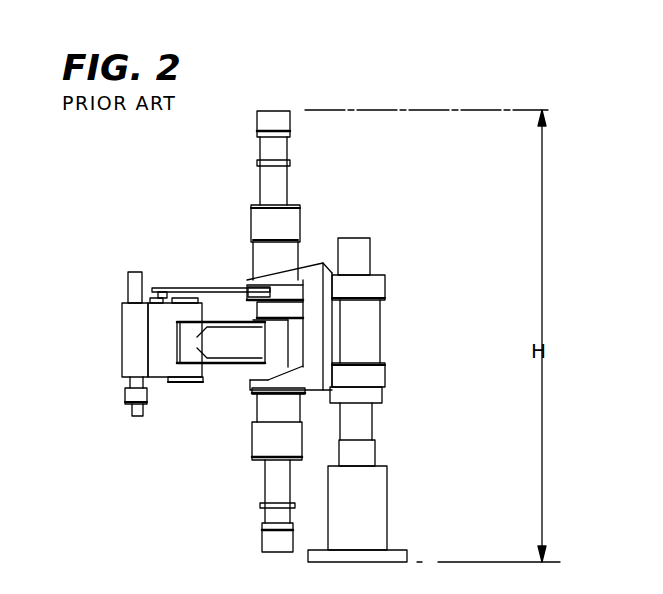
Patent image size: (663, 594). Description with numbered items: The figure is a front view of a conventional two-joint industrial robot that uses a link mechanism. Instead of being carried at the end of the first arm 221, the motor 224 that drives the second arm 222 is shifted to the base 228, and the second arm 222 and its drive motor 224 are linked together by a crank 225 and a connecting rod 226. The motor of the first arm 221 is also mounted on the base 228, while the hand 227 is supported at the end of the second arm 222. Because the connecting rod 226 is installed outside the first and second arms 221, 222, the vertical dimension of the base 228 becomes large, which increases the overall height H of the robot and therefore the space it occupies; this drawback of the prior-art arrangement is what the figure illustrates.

The first arm 221 is at (235, 347).
The second arm 222 is at (162, 367).
The motor 224 is at (280, 183).
The crank 225 is at (245, 288).
The connecting rod 226 is at (192, 288).
The hand 227 is at (130, 410).
The base 228 is at (312, 330).